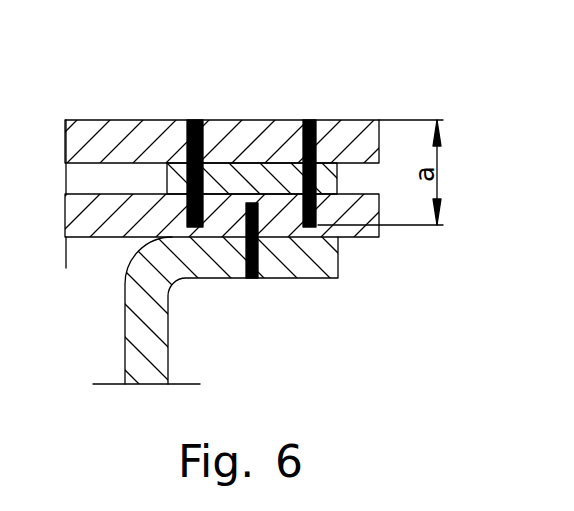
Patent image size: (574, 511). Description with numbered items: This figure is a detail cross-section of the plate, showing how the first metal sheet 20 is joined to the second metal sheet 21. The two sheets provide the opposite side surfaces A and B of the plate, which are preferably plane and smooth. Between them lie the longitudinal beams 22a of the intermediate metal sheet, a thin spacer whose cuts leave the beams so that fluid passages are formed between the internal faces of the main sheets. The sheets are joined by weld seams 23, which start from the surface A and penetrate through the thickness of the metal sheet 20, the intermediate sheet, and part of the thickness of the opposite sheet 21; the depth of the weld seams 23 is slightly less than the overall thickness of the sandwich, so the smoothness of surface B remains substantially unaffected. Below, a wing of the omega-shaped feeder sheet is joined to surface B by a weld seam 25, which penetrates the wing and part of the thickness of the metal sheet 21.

The first metal sheet 20 is at (272, 123).
The second metal sheet 21 is at (90, 220).
The longitudinal beams 22a is at (173, 173).
The weld seam 23 is at (195, 120).
The weld seam 25 is at (248, 280).
The side surface A is at (112, 120).
The side surface B is at (360, 238).